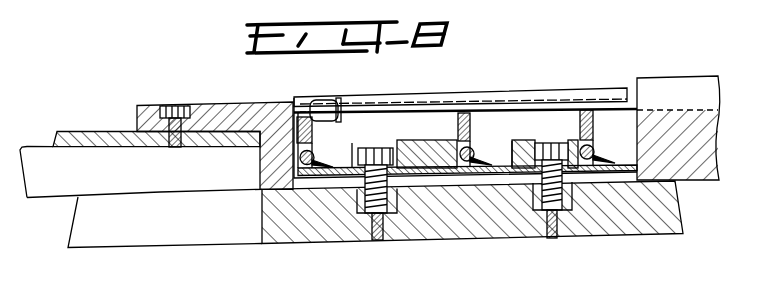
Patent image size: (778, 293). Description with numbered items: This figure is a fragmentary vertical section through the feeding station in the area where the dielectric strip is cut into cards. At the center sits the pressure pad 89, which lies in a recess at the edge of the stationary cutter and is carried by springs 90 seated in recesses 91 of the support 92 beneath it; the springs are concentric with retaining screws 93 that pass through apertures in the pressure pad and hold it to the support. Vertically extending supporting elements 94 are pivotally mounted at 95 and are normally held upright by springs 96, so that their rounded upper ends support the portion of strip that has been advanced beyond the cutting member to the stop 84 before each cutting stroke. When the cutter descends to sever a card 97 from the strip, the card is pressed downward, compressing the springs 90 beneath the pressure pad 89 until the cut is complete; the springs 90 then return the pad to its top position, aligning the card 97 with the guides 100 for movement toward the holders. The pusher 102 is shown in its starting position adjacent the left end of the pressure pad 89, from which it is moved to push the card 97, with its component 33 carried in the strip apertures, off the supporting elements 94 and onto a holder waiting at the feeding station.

The component 33 is at (335, 100).
The stop 84 is at (402, 96).
The pressure pad 89 is at (424, 152).
The springs 90 is at (393, 217).
The recesses 91 is at (358, 210).
The support 92 is at (657, 228).
The retaining screws 93 is at (385, 148).
The supporting elements 94 is at (306, 116).
The pivot 95 is at (320, 150).
The springs 96 is at (316, 157).
The card 97 is at (513, 110).
The guides 100 is at (668, 79).
The pusher 102 is at (216, 104).